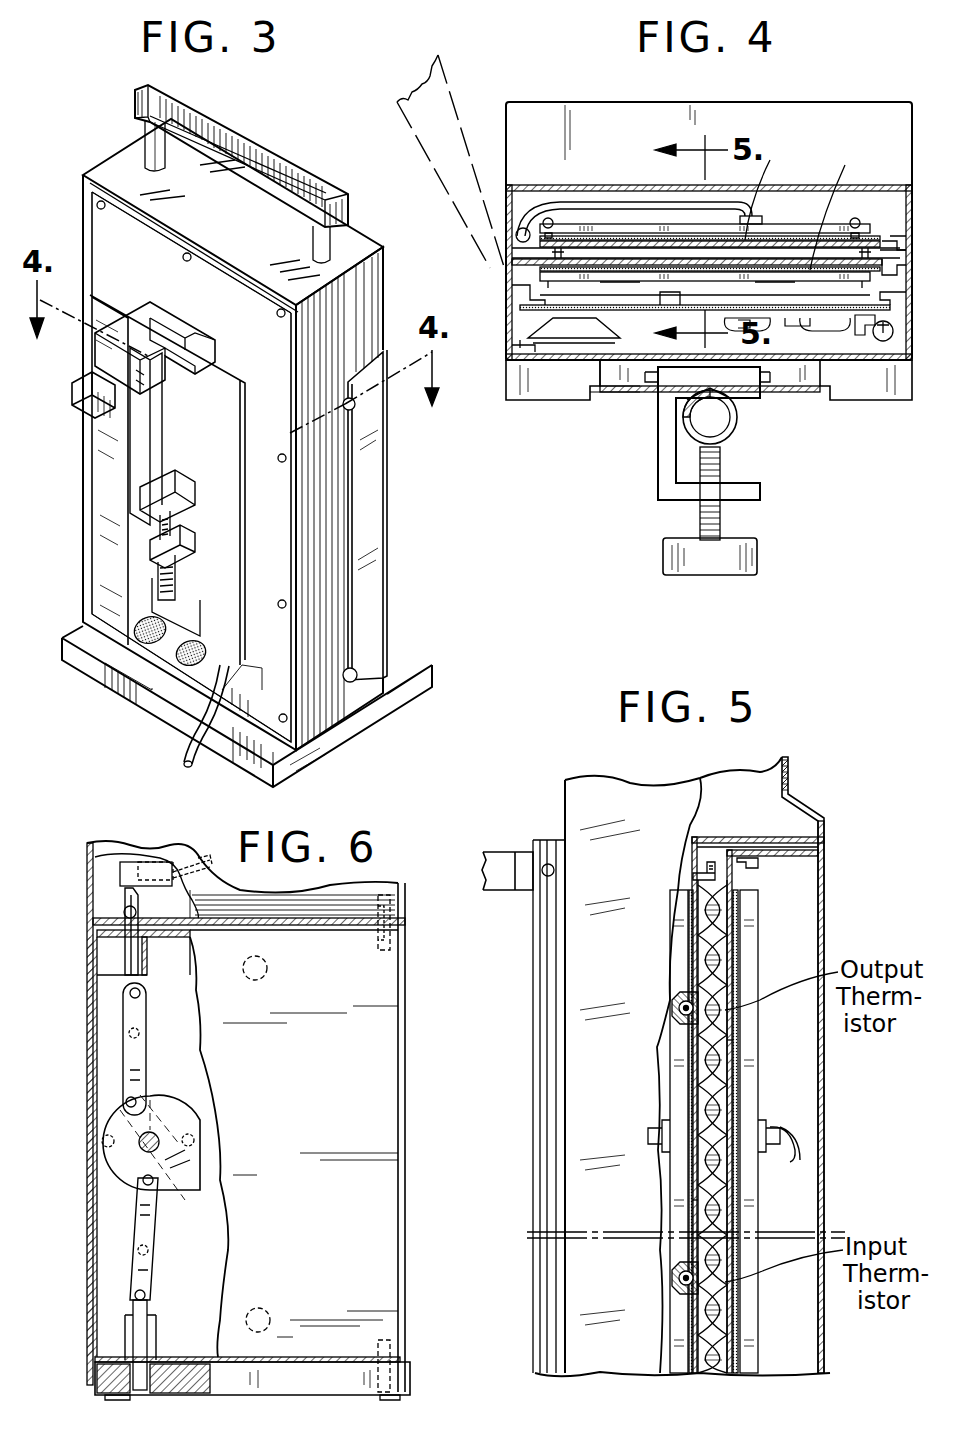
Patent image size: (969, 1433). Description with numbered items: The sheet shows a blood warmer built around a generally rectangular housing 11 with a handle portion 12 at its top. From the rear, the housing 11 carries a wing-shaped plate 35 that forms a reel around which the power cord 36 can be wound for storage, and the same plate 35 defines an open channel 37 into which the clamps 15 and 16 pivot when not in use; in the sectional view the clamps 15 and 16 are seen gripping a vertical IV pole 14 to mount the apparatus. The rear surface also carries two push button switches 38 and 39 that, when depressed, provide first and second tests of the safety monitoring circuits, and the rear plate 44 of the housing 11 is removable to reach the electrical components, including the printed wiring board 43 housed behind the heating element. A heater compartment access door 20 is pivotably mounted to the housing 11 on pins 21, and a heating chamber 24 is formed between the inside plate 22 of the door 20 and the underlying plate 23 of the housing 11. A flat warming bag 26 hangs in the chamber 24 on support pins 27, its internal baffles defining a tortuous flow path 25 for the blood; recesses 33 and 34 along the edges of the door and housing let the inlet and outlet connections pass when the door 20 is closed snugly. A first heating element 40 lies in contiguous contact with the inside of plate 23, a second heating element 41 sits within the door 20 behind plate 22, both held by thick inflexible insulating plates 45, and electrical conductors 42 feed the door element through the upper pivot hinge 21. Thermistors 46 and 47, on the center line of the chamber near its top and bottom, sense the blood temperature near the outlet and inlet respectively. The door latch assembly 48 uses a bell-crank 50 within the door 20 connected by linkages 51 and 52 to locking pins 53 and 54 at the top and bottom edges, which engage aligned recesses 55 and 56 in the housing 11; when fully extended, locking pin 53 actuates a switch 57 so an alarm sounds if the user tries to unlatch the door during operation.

In FIG. 3, the housing 11 is at (122, 162).
In FIG. 4, the housing 11 is at (506, 328).
In FIG. 5, the housing 11 is at (655, 790).
In FIG. 3, the handle portion 12 is at (258, 162).
In FIG. 4, the IV pole 14 is at (738, 422).
In FIG. 3, the clamp 15 is at (110, 350).
In FIG. 4, the clamp 15 is at (762, 484).
In FIG. 5, the clamp 15 is at (522, 850).
In FIG. 3, the clamp 16 is at (145, 570).
In FIG. 3, the heater compartment access door 20 is at (372, 554).
In FIG. 4, the heater compartment access door 20 is at (506, 214).
In FIG. 5, the heater compartment access door 20 is at (826, 850).
In FIG. 6, the heater compartment access door 20 is at (400, 1080).
In FIG. 5, the pins 21 is at (756, 868).
In FIG. 6, the pins 21 is at (395, 940).
In FIG. 4, the inside wall or plate 22 is at (650, 268).
In FIG. 5, the inside wall or plate 22 is at (740, 1202).
In FIG. 4, the underlying wall or plate 23 is at (775, 250).
In FIG. 5, the underlying wall or plate 23 is at (693, 1202).
In FIG. 4, the heating chamber 24 is at (700, 272).
In FIG. 5, the heating chamber 24 is at (733, 1045).
In FIG. 5, the tortuous flow path 25 is at (690, 1055).
In FIG. 5, the warming bag 26 is at (740, 1080).
In FIG. 4, the support pins 27 is at (555, 253).
In FIG. 5, the support pins 27 is at (711, 862).
In FIG. 3, the recess 33 is at (362, 670).
In FIG. 4, the recess 33 is at (895, 252).
In FIG. 3, the recess 34 is at (358, 410).
In FIG. 3, the wing-shaped plate 35 is at (115, 517).
In FIG. 4, the wing-shaped plate 35 is at (612, 395).
In FIG. 5, the wing-shaped plate 35 is at (535, 1020).
In FIG. 3, the power cord 36 is at (180, 748).
In FIG. 3, the open channel 37 is at (140, 445).
In FIG. 3, the push button switch 38 is at (136, 638).
In FIG. 3, the push button switch 39 is at (182, 665).
In FIG. 4, the first heating element 40 is at (855, 292).
In FIG. 5, the first heating element 40 is at (672, 940).
In FIG. 4, the second heating element 41 is at (598, 225).
In FIG. 5, the second heating element 41 is at (758, 942).
In FIG. 4, the electrical conductors 42 is at (530, 225).
In FIG. 5, the electrical conductors 42 is at (800, 1150).
In FIG. 4, the printed wiring board 43 is at (585, 333).
In FIG. 3, the rear plate 44 is at (115, 236).
In FIG. 4, the plates of insulating material 45 is at (845, 232).
In FIG. 5, the thermistor 46 is at (675, 1002).
In FIG. 6, the thermistor 46 is at (270, 965).
In FIG. 5, the thermistor 47 is at (675, 1280).
In FIG. 6, the thermistor 47 is at (270, 1318).
In FIG. 6, the latch assembly 48 is at (192, 1090).
In FIG. 6, the bell-crank 50 is at (175, 1160).
In FIG. 6, the linkage 51 is at (125, 1015).
In FIG. 6, the linkage 52 is at (140, 1222).
In FIG. 6, the locking pin 53 is at (128, 958).
In FIG. 6, the locking pin 54 is at (145, 1345).
In FIG. 6, the recess 55 is at (120, 912).
In FIG. 6, the recess 56 is at (125, 1340).
In FIG. 6, the switch 57 is at (137, 875).